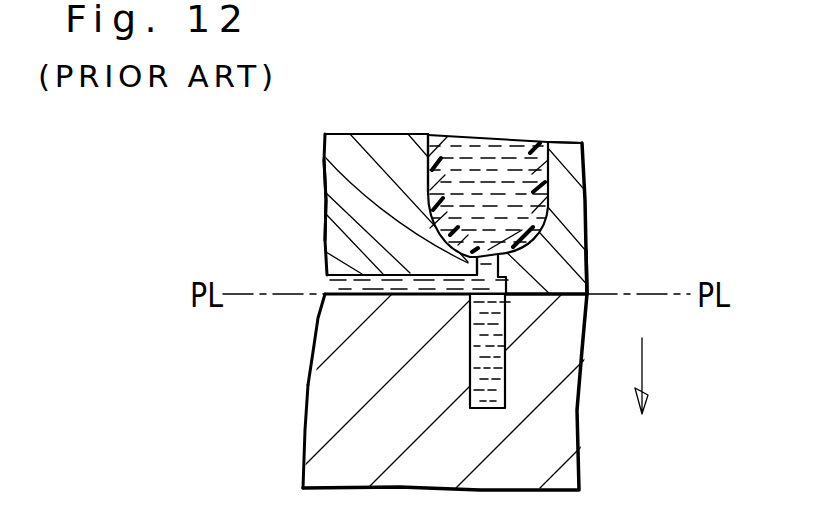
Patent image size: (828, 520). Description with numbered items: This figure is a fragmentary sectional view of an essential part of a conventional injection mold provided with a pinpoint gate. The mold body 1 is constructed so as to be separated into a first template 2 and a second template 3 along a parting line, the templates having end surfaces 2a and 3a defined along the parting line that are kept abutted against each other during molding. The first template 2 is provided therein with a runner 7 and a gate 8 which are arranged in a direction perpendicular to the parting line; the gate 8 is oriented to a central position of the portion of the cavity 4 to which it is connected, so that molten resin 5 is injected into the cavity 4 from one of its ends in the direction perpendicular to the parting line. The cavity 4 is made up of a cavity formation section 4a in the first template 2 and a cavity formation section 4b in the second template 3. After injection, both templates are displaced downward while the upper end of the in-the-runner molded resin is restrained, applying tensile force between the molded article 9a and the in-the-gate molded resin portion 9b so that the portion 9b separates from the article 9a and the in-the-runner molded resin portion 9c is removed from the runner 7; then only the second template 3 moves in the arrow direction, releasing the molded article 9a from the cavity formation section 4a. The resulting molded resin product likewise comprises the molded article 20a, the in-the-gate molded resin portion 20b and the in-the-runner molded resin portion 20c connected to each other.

The mold body 1 is at (595, 127).
The first template 2 is at (557, 203).
The end surface 2a is at (577, 297).
The second template 3 is at (533, 452).
The end surface 3a is at (584, 263).
The cavity 4 is at (248, 330).
The cavity formation section 4a is at (355, 296).
The cavity formation section 4b is at (470, 357).
The molten resin 5 is at (475, 139).
The runner 7 is at (520, 153).
The gate 8 is at (505, 267).
The molded article 9a is at (327, 210).
The in-the-gate molded resin portion 9b is at (360, 160).
The in-the-runner molded resin portion 9c is at (443, 137).
The molded article 20a is at (497, 378).
The in-the-gate molded resin portion 20b is at (547, 223).
The in-the-runner molded resin portion 20c is at (492, 155).